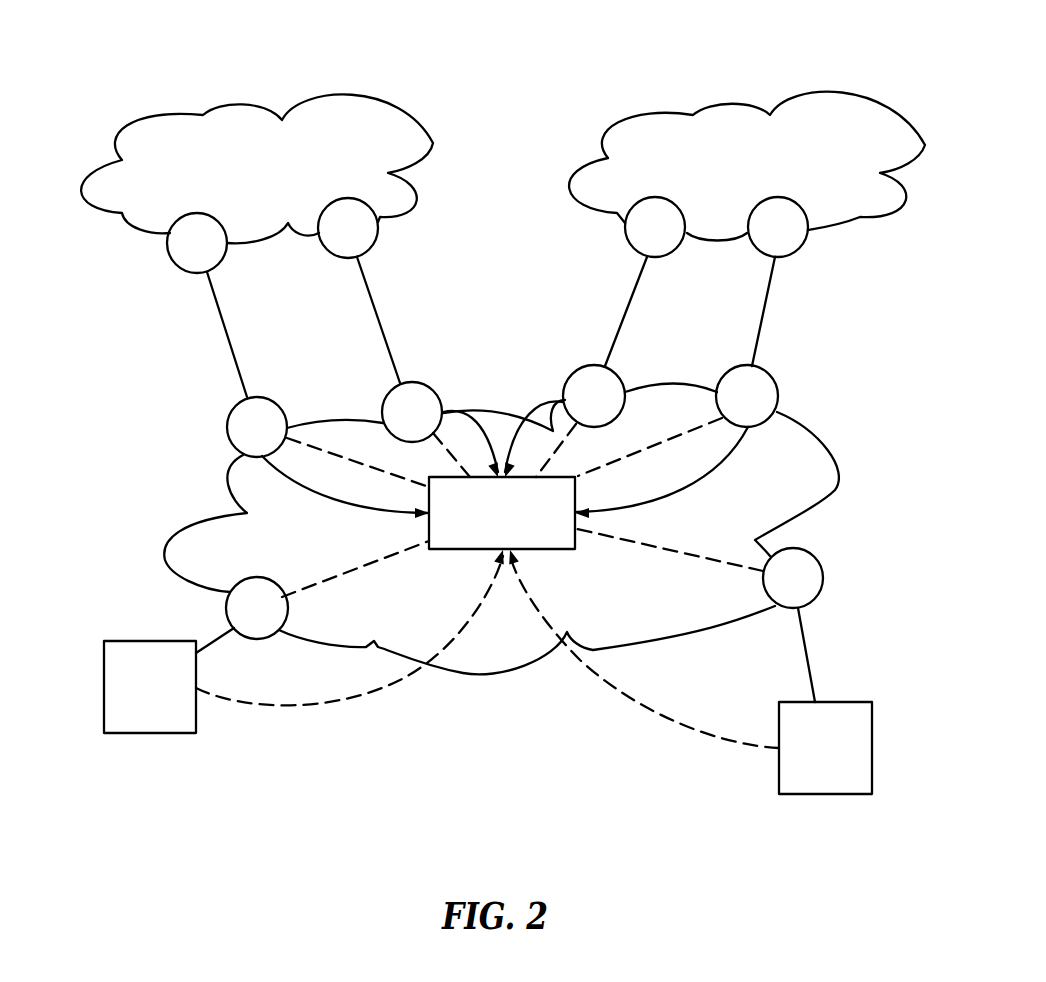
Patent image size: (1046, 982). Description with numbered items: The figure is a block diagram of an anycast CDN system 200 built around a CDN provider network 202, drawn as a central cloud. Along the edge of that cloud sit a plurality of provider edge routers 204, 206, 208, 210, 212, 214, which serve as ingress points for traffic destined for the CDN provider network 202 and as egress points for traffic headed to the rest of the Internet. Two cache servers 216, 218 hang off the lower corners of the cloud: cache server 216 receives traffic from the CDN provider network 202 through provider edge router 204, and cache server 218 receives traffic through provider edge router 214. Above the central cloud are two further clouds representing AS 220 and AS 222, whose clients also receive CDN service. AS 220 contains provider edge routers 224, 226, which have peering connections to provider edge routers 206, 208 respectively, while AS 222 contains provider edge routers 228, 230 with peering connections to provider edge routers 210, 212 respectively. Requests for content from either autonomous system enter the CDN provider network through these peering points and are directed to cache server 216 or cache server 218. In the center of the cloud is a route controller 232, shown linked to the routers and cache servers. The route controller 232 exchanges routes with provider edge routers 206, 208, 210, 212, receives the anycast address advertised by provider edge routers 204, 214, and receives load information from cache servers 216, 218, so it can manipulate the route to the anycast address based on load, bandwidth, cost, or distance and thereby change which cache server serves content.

The anycast CDN system 200 is at (496, 84).
The CDN provider network 202 is at (197, 520).
The provider edge router 204 is at (259, 640).
The provider edge router 206 is at (229, 422).
The provider edge router 208 is at (383, 408).
The provider edge router 210 is at (594, 365).
The provider edge router 212 is at (748, 365).
The provider edge router 214 is at (825, 573).
The cache server 216 is at (148, 641).
The cache server 218 is at (823, 794).
The AS 220 is at (255, 108).
The AS 222 is at (745, 106).
The provider edge router 224 is at (165, 242).
The provider edge router 226 is at (378, 230).
The provider edge router 228 is at (626, 226).
The provider edge router 230 is at (808, 232).
The route controller 232 is at (533, 551).